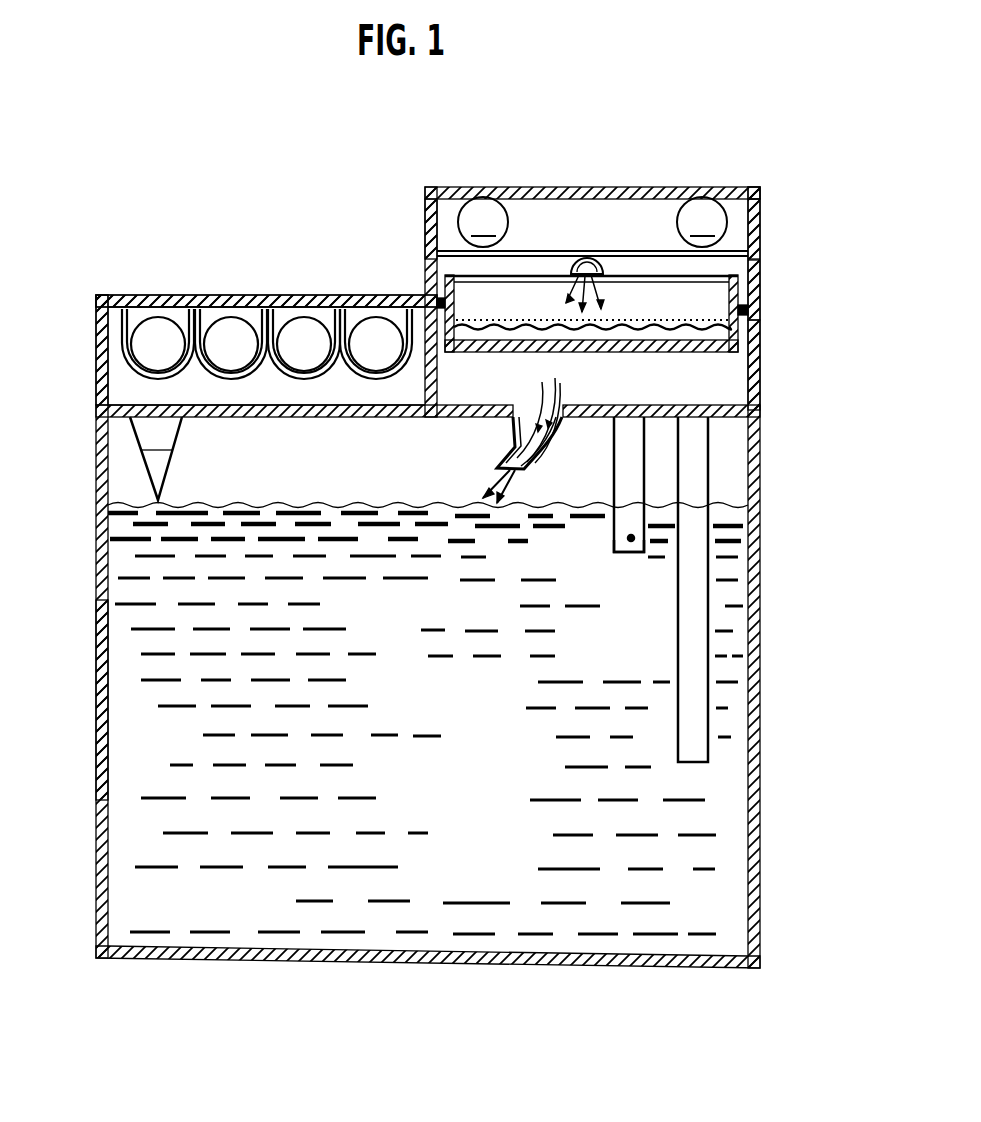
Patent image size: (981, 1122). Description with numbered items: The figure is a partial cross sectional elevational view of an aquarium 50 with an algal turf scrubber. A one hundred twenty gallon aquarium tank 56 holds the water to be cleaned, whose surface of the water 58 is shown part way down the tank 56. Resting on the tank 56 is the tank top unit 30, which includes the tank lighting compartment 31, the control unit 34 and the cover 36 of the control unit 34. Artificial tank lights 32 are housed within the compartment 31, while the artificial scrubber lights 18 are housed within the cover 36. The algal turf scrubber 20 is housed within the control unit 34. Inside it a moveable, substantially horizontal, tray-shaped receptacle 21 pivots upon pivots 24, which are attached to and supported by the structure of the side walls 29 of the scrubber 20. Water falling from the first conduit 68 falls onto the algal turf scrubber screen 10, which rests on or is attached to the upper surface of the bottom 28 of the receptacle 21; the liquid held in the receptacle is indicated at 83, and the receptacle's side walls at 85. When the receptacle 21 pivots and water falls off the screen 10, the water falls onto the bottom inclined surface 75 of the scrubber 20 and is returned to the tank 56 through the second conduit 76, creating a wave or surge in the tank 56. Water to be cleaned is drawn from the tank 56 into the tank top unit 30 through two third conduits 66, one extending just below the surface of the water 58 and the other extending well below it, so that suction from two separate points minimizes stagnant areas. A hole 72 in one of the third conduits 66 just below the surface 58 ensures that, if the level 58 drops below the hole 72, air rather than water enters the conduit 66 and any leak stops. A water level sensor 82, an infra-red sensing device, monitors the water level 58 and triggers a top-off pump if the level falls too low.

The algal turf scrubber screen 10 is at (583, 342).
The artificial scrubber lights 18 is at (592, 222).
The algal turf scrubber 20 is at (762, 396).
The tray-shaped receptacle 21 is at (762, 350).
The pivots 24 is at (437, 302).
The bottom of the receptacle 28 is at (515, 352).
The side walls 29 is at (425, 258).
The tank top unit 30 is at (298, 295).
The tank lighting compartment 31 is at (96, 353).
The artificial tank lights 32 is at (226, 353).
The control unit 34 is at (762, 270).
The cover 36 is at (762, 186).
The aquarium 50 is at (96, 434).
The aquarium tank 56 is at (96, 566).
The surface of the water 58 is at (295, 502).
The third conduits 66 is at (614, 462).
The first conduit 68 is at (590, 258).
The hole 72 is at (629, 540).
The bottom inclined surface 75 is at (645, 408).
The second conduit 76 is at (513, 440).
The water level sensor 82 is at (172, 462).
The liquid in tray 83 is at (563, 307).
The tray side walls 85 is at (454, 290).